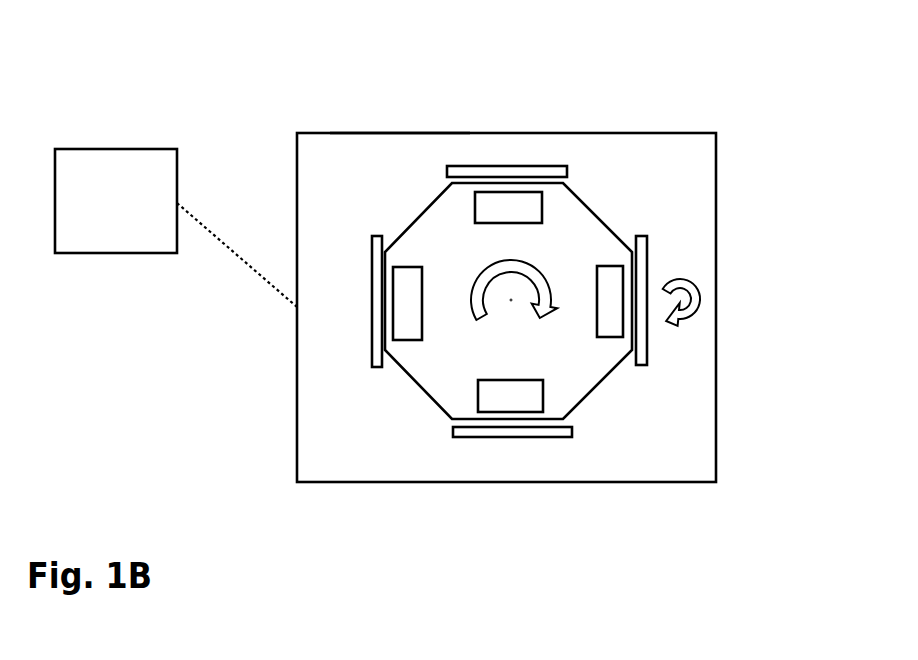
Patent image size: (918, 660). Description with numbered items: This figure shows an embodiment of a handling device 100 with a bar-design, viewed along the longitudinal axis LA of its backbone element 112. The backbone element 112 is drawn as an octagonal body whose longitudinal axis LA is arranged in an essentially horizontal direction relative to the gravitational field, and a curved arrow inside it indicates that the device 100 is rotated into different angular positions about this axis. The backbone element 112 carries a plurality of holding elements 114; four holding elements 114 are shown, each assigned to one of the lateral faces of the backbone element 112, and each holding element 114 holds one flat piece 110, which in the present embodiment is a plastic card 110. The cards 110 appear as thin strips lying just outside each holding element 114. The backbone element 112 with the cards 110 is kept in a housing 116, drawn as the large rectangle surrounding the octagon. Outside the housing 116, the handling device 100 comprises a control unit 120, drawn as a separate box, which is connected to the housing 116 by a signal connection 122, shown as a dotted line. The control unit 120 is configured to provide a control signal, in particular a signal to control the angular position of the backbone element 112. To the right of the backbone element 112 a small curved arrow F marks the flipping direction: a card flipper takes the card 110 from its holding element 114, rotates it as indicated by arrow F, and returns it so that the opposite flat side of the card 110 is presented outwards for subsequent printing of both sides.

The handling device 100 is at (667, 62).
The flat piece 110 is at (520, 168).
The backbone element 112 is at (603, 220).
The holding element 114 is at (403, 265).
The housing 116 is at (402, 132).
The control unit 120 is at (113, 149).
The signal connection 122 is at (203, 223).
The flipping direction F is at (700, 273).
The longitudinal axis LA is at (472, 320).